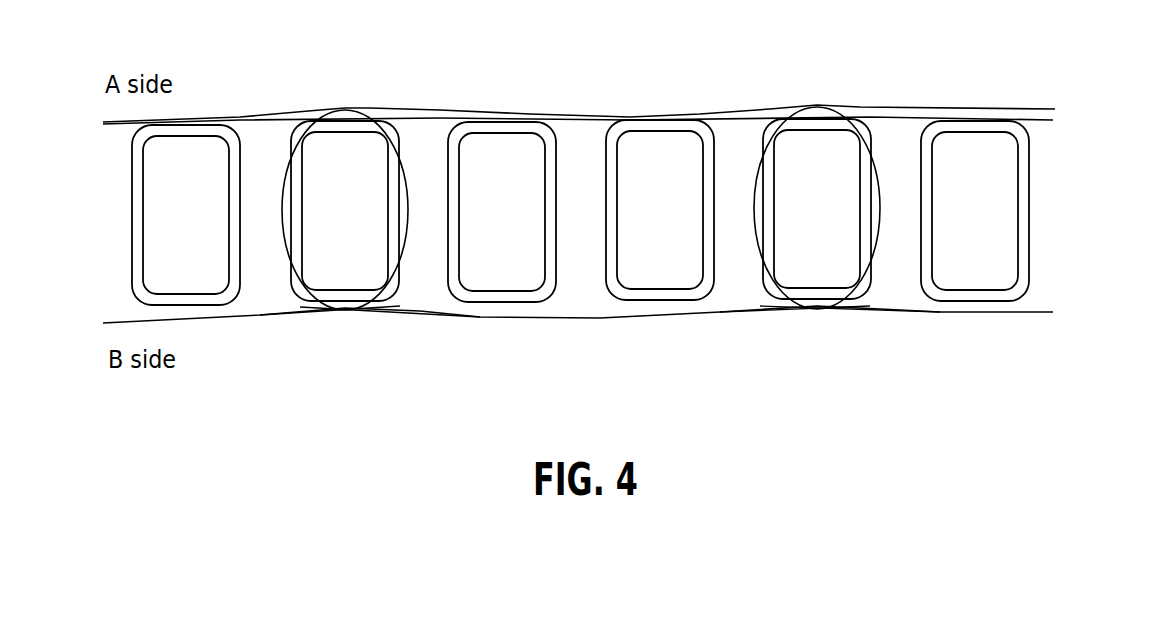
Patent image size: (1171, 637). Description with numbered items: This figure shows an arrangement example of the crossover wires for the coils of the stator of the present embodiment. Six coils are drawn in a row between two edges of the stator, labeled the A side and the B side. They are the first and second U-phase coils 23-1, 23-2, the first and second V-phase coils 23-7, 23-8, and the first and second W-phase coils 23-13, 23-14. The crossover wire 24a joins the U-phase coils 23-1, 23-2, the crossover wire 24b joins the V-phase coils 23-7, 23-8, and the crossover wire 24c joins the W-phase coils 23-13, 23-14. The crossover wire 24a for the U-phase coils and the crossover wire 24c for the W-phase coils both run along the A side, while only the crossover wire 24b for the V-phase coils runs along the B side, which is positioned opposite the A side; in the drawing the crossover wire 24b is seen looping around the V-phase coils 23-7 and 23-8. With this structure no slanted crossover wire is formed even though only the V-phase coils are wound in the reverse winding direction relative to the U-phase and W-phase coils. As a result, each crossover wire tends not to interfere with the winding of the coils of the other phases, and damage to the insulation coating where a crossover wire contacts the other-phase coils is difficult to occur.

The crossover wire 24a is at (1037, 104).
The crossover wire 24b is at (1042, 313).
The crossover wire 24c is at (1040, 123).
The U-phase coil 23-1 is at (186, 215).
The V-phase coil 23-7 is at (345, 210).
The W-phase coil 23-13 is at (502, 212).
The U-phase coil 23-2 is at (660, 210).
The V-phase coil 23-8 is at (817, 208).
The W-phase coil 23-14 is at (975, 211).